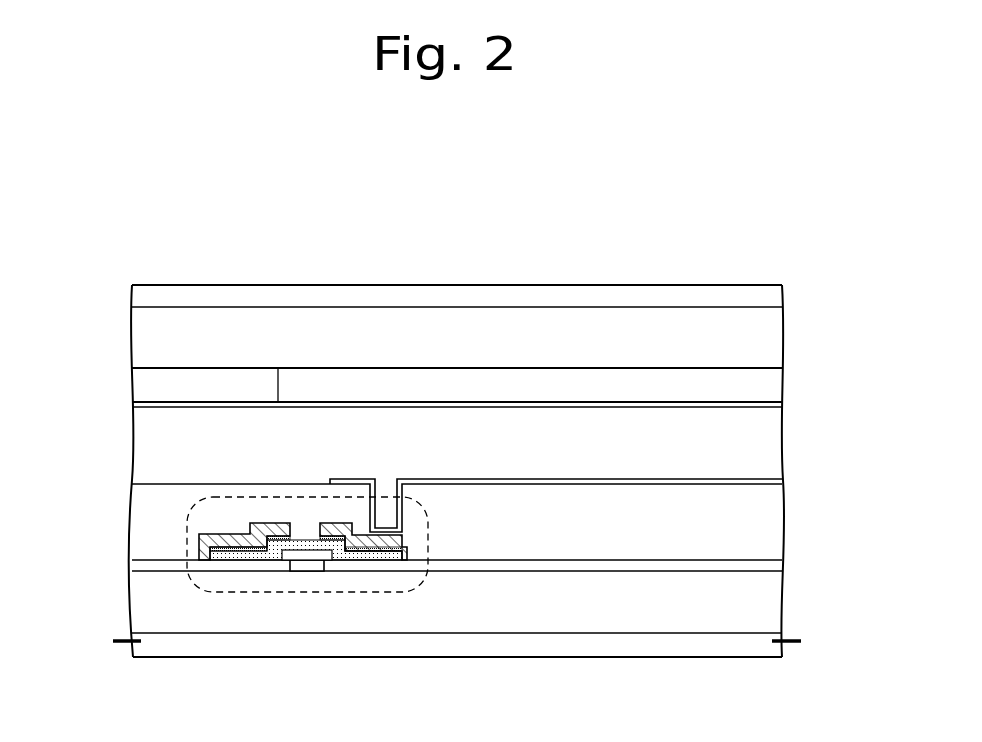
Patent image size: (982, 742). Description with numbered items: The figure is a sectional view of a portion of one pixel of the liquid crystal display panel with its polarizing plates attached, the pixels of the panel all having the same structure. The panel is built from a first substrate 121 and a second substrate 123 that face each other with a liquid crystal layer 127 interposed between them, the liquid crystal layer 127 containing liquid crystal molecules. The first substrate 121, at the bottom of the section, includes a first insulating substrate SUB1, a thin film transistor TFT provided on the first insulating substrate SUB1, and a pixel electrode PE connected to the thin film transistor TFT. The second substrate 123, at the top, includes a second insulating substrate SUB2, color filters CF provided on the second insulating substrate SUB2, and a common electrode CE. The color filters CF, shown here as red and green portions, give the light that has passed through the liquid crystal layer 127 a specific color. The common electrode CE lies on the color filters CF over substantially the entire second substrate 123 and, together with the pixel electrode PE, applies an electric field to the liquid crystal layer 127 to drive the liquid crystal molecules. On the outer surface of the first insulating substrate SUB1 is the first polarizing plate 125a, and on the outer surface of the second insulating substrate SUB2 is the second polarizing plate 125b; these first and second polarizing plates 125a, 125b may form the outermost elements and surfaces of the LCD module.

The second polarizing plate 125b is at (773, 296).
The second insulating substrate SUB2 is at (773, 337).
The color filter CF is at (773, 378).
The common electrode CE is at (773, 405).
The pixel electrode PE is at (773, 482).
The thin film transistor TFT is at (428, 527).
The first insulating substrate SUB1 is at (773, 600).
The first polarizing plate 125a is at (773, 651).
The second substrate 123 is at (92, 310).
The liquid crystal layer 127 is at (92, 411).
The first substrate 121 is at (92, 486).